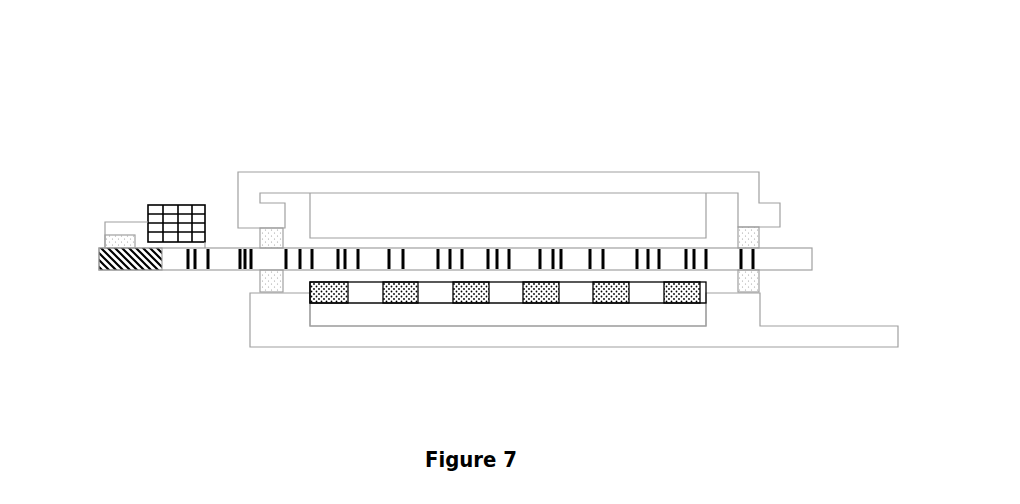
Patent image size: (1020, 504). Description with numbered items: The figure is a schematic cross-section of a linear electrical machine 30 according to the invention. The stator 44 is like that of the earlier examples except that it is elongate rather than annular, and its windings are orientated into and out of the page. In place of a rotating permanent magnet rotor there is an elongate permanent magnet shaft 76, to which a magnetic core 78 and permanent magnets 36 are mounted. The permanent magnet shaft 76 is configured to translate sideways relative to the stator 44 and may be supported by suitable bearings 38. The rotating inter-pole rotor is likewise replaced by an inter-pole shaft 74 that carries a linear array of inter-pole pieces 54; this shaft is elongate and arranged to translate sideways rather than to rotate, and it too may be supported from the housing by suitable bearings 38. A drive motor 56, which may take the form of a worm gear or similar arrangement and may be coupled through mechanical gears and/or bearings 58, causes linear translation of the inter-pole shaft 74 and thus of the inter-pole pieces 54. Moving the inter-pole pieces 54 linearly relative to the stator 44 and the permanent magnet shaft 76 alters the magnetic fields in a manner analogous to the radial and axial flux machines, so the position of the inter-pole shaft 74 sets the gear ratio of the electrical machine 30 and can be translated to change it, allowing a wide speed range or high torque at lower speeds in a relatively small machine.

The linear electrical machine 30 is at (155, 90).
The permanent magnets 36 is at (441, 288).
The bearings 38 is at (252, 281).
The stator 44 is at (512, 210).
The inter-pole pieces 54 is at (412, 257).
The drive motor 56 is at (200, 210).
The mechanical gears and/or bearings 58 is at (108, 240).
The inter-pole shaft 74 is at (782, 258).
The permanent magnet shaft 76 is at (722, 332).
The magnetic core 78 is at (631, 311).